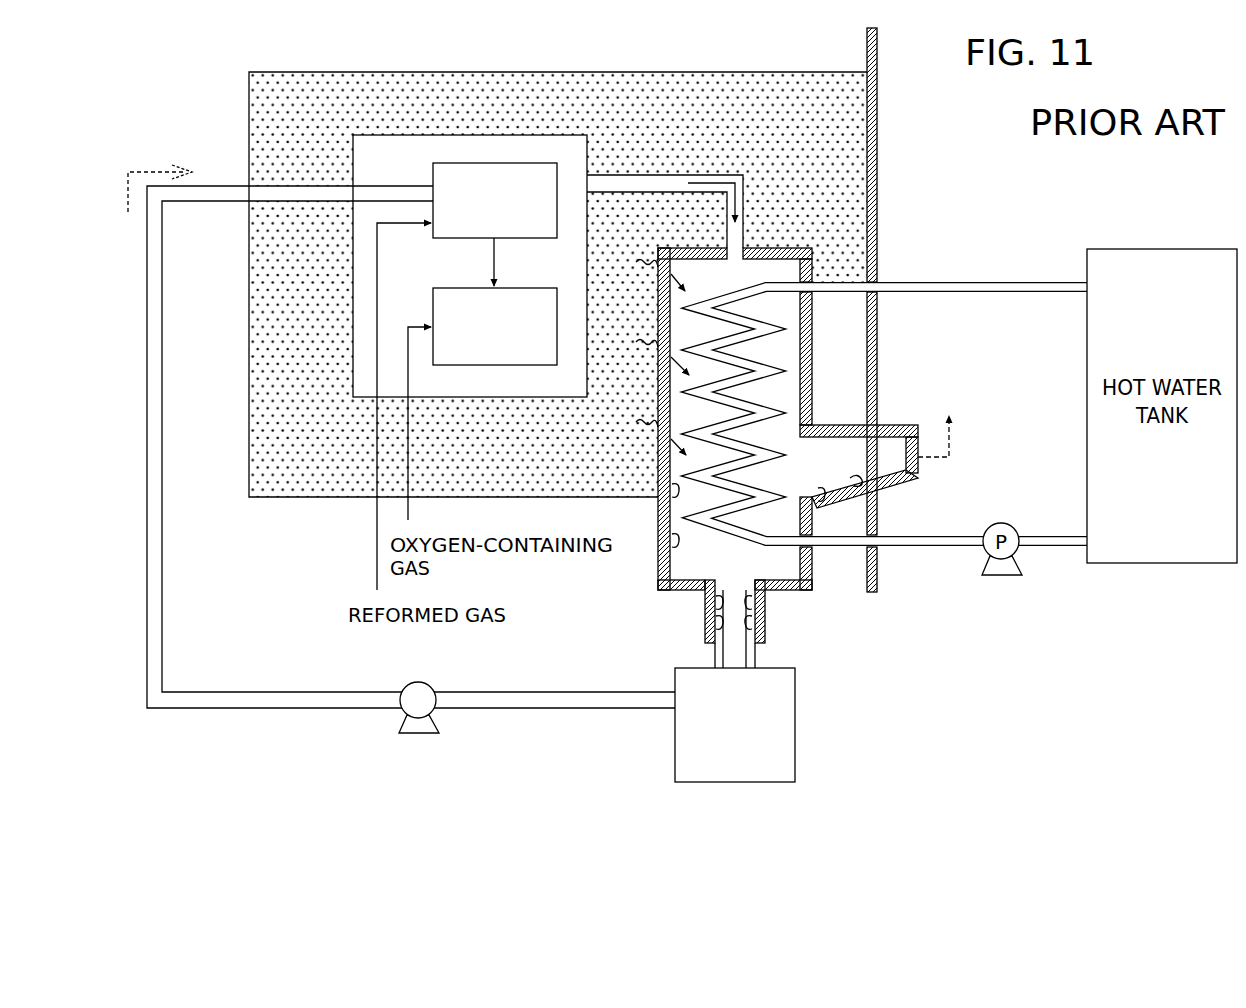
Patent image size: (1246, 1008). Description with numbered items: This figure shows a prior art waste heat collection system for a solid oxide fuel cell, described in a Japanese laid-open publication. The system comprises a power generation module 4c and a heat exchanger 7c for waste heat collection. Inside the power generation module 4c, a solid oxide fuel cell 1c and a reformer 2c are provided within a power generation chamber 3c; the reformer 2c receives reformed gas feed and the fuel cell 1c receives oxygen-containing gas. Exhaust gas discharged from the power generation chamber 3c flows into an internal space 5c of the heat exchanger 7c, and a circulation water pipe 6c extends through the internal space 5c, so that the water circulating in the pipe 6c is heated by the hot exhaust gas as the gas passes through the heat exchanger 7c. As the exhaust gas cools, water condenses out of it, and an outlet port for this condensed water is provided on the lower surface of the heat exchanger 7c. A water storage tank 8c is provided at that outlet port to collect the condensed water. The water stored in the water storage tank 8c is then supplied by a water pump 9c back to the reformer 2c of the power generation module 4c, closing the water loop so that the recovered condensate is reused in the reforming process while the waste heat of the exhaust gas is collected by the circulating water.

The solid oxide fuel cell 1c is at (532, 287).
The reformer 2c is at (460, 240).
The power generation chamber 3c is at (400, 165).
The power generation module 4c is at (299, 70).
The internal space 5c is at (787, 313).
The circulation water pipe 6c is at (770, 356).
The heat exchanger for waste heat collection 7c is at (656, 584).
The water storage tank 8c is at (761, 785).
The water pump 9c is at (418, 683).